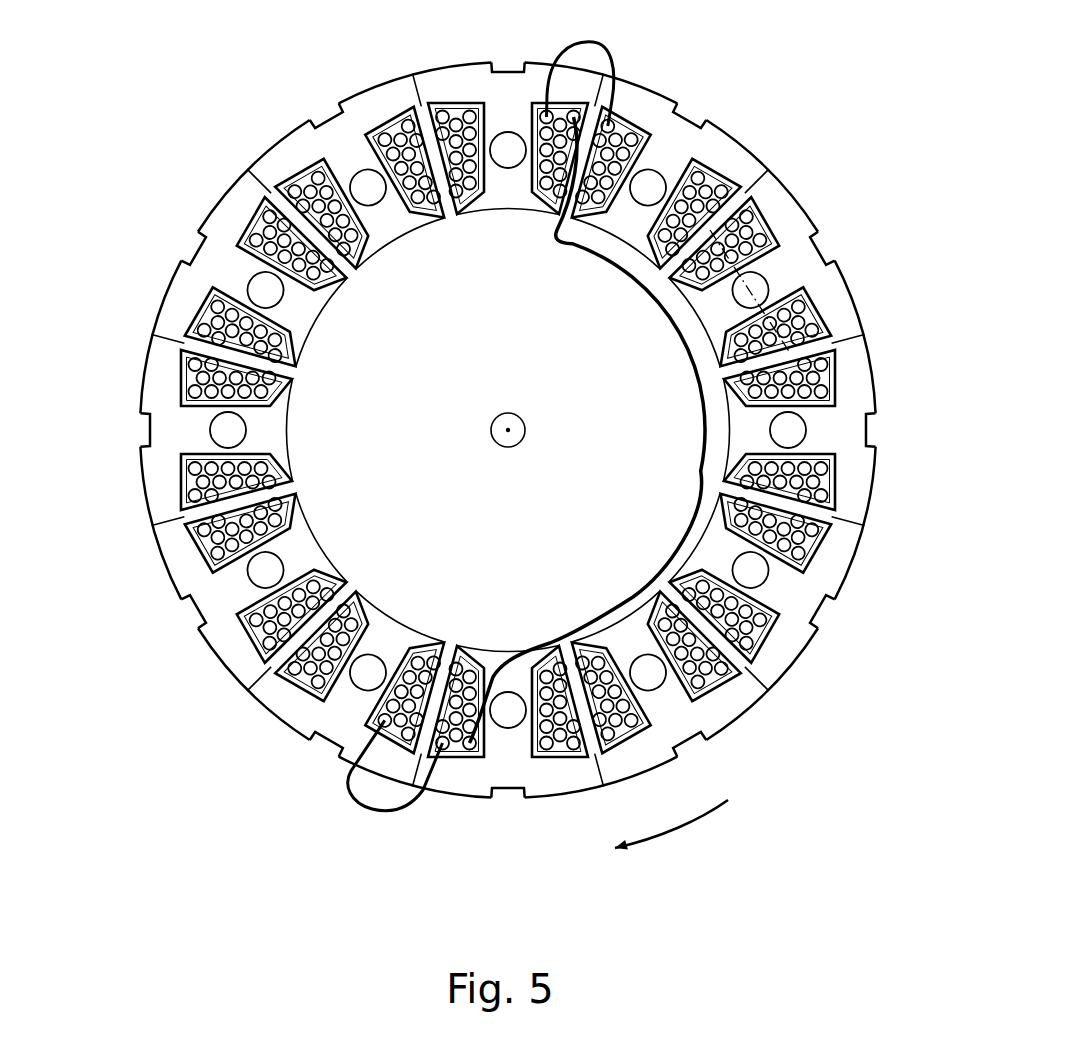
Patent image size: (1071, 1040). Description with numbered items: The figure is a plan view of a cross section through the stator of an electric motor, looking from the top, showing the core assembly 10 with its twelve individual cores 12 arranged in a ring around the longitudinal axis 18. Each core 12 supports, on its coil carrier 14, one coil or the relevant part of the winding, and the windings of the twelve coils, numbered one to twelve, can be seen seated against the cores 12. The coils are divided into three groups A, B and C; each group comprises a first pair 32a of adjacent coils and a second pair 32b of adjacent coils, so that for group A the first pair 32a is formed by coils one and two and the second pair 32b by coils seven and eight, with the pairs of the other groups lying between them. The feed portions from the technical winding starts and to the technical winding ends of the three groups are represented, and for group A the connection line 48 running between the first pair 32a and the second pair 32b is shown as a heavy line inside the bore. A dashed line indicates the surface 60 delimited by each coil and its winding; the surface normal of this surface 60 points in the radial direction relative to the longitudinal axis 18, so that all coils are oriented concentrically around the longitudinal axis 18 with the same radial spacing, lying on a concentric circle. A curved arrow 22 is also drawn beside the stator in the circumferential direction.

The core assembly 10 is at (845, 118).
The core 12 is at (178, 270).
The coil carrier 14 is at (840, 487).
The longitudinal axis 18 is at (526, 432).
The rotation direction 22 is at (700, 818).
The first pair 32a is at (561, 612).
The second pair 32b is at (311, 384).
The connection line 48 is at (602, 248).
The surface 60 is at (760, 293).